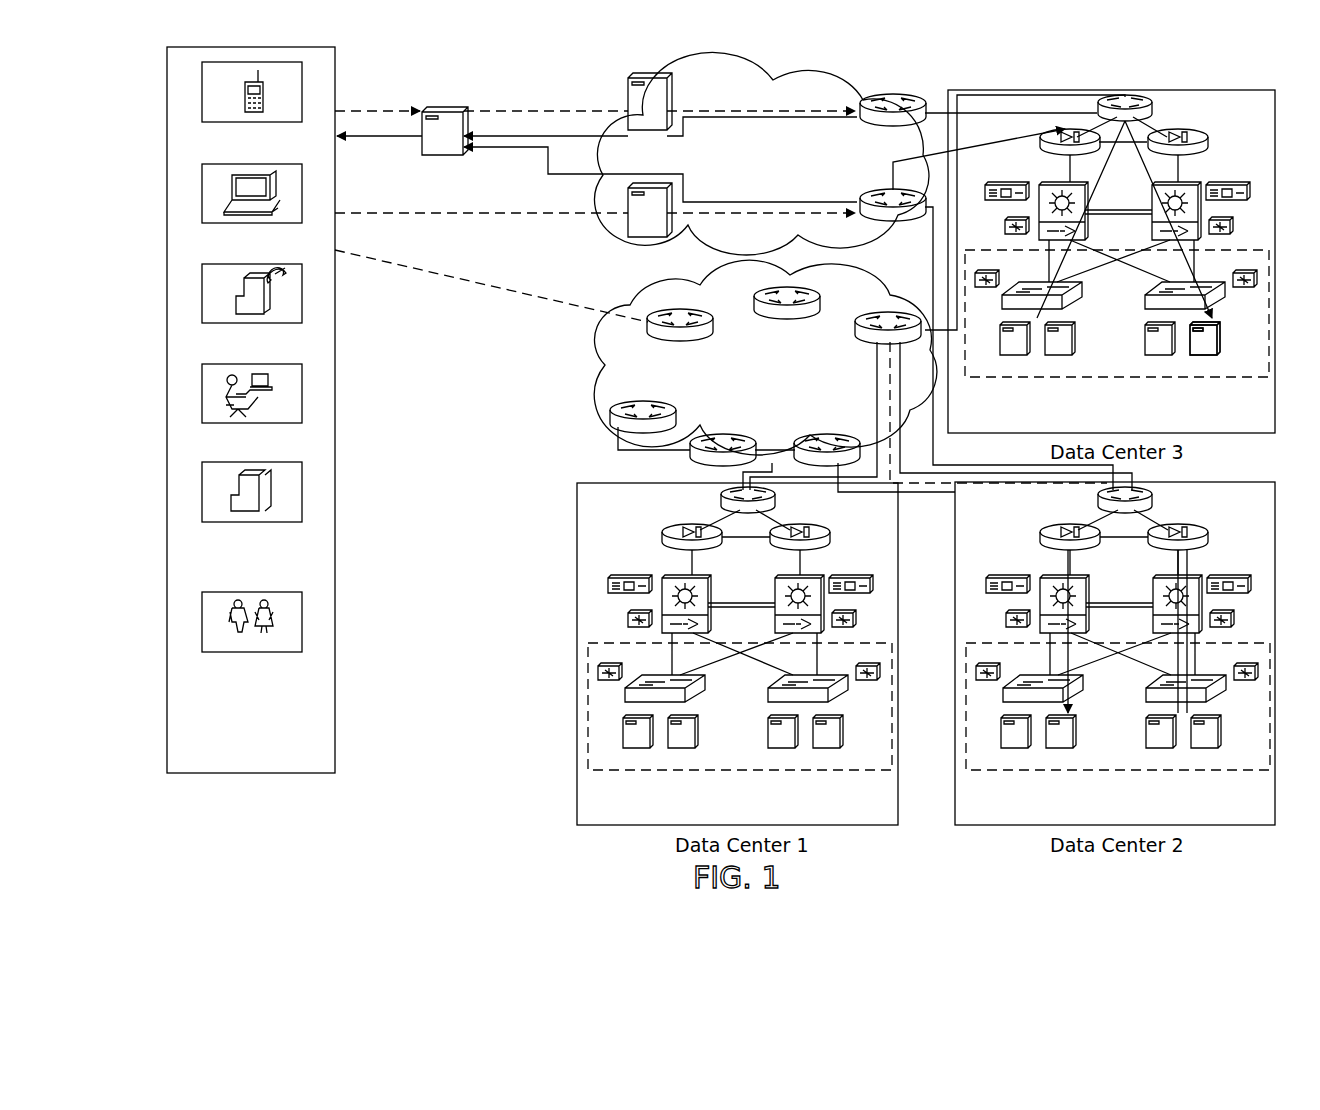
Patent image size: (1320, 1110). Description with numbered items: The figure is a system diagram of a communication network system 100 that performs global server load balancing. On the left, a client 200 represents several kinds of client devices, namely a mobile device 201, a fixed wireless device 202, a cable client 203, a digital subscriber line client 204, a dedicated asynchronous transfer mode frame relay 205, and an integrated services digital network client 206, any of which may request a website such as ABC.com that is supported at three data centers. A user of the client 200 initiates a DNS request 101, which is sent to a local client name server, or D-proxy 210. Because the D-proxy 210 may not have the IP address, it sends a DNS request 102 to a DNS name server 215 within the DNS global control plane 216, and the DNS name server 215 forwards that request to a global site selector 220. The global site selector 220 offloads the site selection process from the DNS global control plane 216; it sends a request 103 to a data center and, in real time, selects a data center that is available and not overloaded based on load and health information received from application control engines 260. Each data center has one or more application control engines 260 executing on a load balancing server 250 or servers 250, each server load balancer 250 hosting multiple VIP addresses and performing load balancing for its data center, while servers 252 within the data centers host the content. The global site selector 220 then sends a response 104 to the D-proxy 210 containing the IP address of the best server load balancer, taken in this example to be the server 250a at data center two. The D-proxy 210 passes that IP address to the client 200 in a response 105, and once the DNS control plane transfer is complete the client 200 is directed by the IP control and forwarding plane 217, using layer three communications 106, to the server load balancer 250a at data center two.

The system 100 is at (1200, 75).
The DNS request 101 is at (405, 108).
The DNS request 102 is at (490, 110).
The request 103 is at (1058, 95).
The response 104 is at (570, 138).
The response 105 is at (368, 137).
The layer 3 communications 106 is at (925, 485).
The client 200 is at (335, 700).
The mobile device 201 is at (302, 90).
The fixed wireless device 202 is at (302, 200).
The cable client 203 is at (302, 293).
The digital subscriber line client 204 is at (302, 392).
The dedicated asynchronous transfer mode frame relay 205 is at (302, 490).
The integrated services digital network 206 is at (302, 620).
The client name server (D-proxy) 210 is at (453, 108).
The DNS name server 215 is at (650, 73).
The DNS global control plane 216 is at (760, 78).
The IP control and forwarding plane 217 is at (735, 309).
The global site selector 220 is at (865, 95).
The server load balancer 250 is at (722, 500).
The server load balancer 250a is at (1152, 498).
The server 252 is at (1203, 357).
The application control engine 260 is at (775, 498).